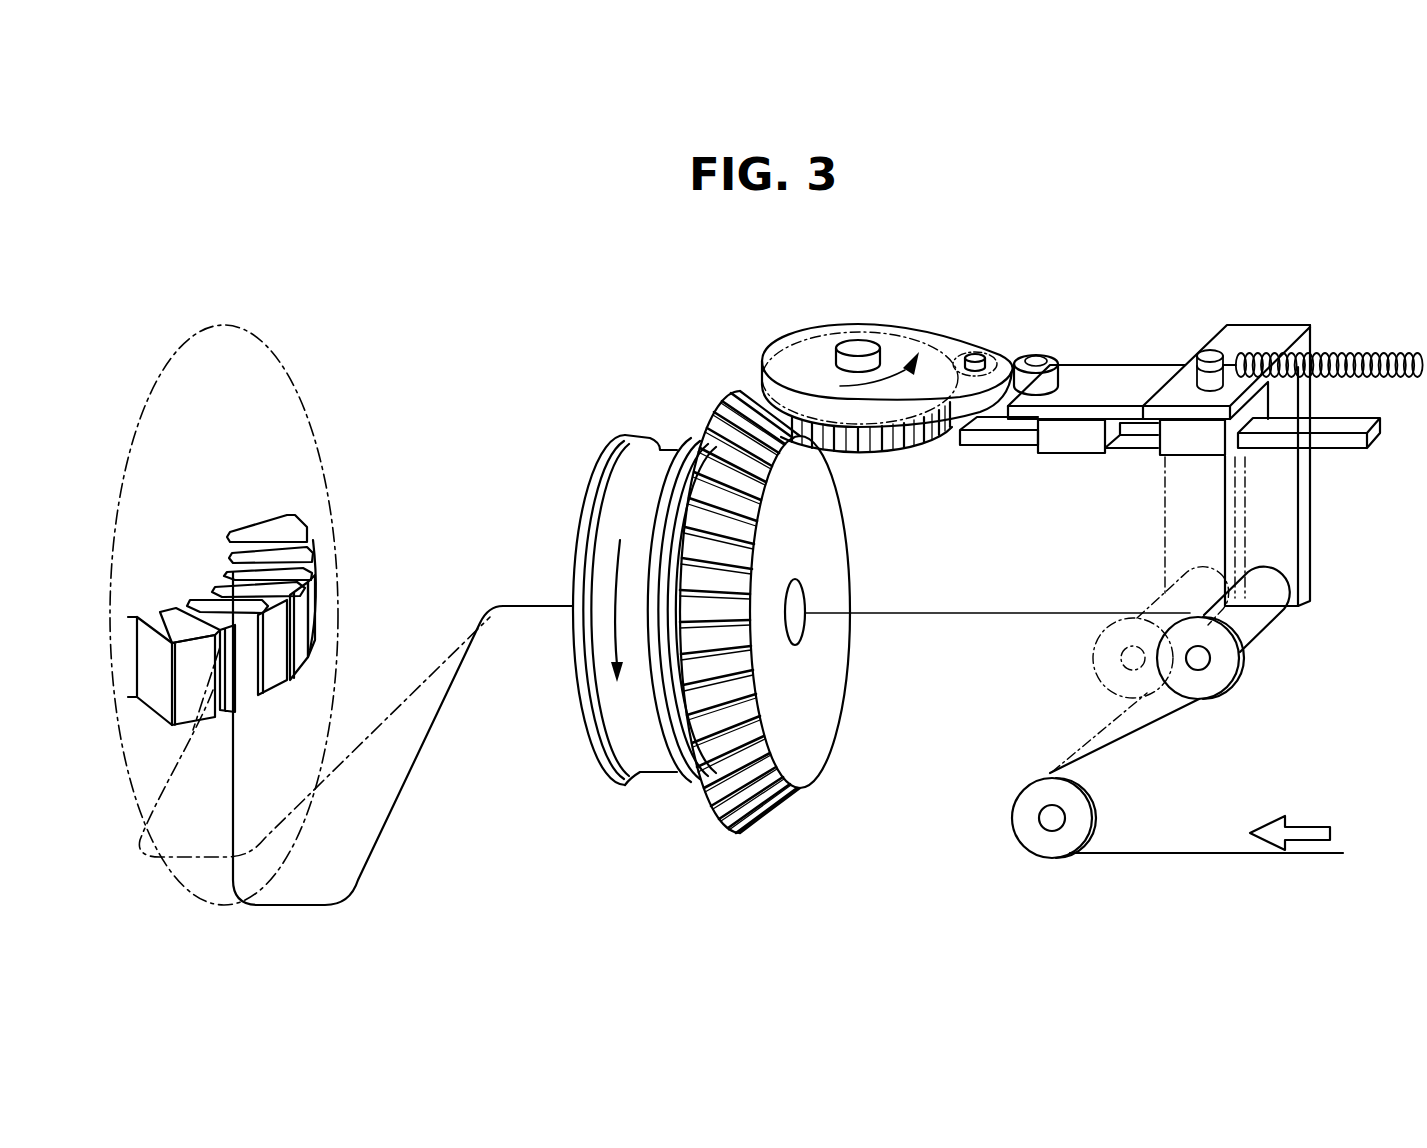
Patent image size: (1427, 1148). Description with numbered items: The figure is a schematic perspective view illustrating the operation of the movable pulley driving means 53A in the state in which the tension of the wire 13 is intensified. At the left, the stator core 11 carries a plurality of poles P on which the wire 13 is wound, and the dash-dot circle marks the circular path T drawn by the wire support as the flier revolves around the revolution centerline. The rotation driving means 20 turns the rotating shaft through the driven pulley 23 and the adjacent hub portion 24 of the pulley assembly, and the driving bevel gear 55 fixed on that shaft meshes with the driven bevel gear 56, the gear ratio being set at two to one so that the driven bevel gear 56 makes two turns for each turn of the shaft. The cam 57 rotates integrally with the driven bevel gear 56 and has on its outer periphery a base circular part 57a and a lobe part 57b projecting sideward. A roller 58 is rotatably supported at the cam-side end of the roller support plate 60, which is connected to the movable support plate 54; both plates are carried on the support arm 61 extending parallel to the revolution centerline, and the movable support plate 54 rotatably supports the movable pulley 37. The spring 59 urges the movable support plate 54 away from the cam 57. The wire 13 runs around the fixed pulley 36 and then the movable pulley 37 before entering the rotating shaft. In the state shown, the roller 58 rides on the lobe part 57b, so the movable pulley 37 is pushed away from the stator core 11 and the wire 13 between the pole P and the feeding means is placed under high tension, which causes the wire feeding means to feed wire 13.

The circular path T is at (227, 323).
The pole P is at (300, 610).
The stator core 11 is at (261, 601).
The wire 13 is at (917, 612).
The rotation driving means 20 is at (848, 625).
The driven pulley 23 is at (587, 723).
The hub drum 24 is at (642, 755).
The driving bevel gear 55 is at (795, 812).
The movable pulley driving means 53A is at (831, 377).
The cam 57 is at (831, 398).
The base circular part 57a is at (762, 370).
The lobe part 57b is at (1022, 397).
The driven bevel gear 56 is at (868, 442).
The roller 58 is at (1062, 373).
The roller support plate 60 is at (1120, 365).
The spring 59 is at (1355, 356).
The movable support plate 54 is at (1285, 498).
The support arm 61 is at (1143, 437).
The movable pulley 37 is at (1226, 668).
The fixed pulley 36 is at (1018, 818).